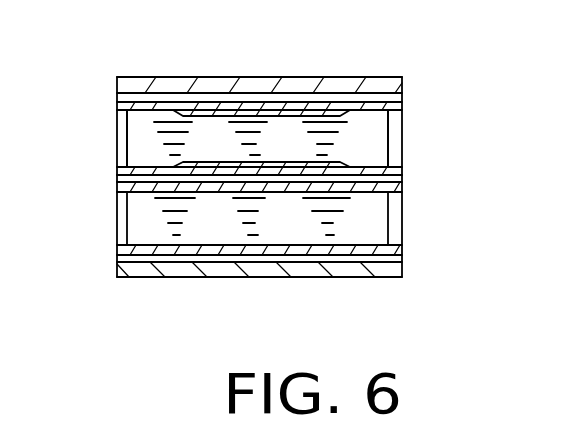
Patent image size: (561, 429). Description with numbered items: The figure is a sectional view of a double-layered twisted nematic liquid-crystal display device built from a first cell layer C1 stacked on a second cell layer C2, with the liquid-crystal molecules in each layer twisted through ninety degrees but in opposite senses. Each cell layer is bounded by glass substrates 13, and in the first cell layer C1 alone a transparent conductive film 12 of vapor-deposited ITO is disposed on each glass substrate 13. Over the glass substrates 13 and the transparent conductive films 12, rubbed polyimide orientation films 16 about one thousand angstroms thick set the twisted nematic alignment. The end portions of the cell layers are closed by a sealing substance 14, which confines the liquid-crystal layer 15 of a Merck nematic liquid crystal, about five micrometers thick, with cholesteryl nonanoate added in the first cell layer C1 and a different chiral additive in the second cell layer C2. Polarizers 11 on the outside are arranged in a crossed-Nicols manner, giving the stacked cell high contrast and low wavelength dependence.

The polarizer 11 is at (403, 80).
The transparent conductive film 12 is at (293, 110).
The glass substrate 13 is at (403, 105).
The sealing substance 14 is at (403, 145).
The liquid-crystal layer 15 is at (143, 142).
The liquid-crystal-molecule orientation film 16 is at (403, 110).
The first cell layer C1 is at (118, 87).
The second cell layer C2 is at (118, 276).